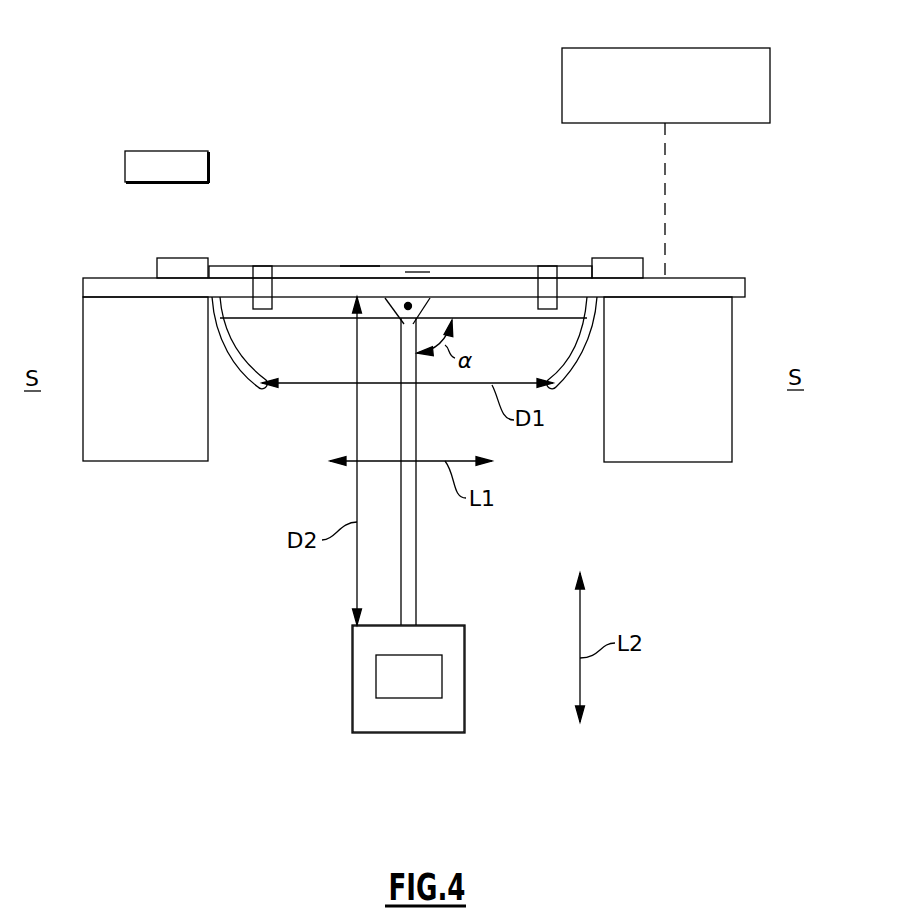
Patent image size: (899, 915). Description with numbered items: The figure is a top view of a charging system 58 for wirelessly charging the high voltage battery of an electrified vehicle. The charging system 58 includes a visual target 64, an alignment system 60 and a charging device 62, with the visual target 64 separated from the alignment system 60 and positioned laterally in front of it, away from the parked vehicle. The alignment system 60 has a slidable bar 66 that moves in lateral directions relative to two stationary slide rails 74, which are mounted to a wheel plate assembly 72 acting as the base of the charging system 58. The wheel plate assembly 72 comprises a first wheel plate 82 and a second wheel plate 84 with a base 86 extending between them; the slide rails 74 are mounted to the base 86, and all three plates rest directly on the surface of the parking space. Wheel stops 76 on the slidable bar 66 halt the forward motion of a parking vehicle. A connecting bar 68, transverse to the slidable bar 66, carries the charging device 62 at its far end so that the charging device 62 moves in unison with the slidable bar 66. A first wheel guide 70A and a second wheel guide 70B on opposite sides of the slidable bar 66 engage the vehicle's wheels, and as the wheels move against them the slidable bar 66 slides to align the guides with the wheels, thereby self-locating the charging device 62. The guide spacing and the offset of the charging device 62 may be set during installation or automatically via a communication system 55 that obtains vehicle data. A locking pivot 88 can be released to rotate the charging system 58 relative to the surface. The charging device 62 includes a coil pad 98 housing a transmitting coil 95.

The communication system 55 is at (687, 48).
The charging system 58 is at (464, 146).
The alignment system 60 is at (483, 277).
The charging device 62 is at (466, 718).
The visual target 64 is at (153, 157).
The slidable bar 66 is at (682, 287).
The connecting bar 68 is at (416, 533).
The first wheel guide 70A is at (248, 360).
The second wheel guide 70B is at (578, 345).
The wheel plate assembly 72 is at (368, 265).
The slide rails 74 is at (263, 270).
The wheel stops 76 is at (185, 267).
The first wheel plate 82 is at (134, 396).
The second wheel plate 84 is at (655, 396).
The base 86 is at (417, 272).
The locking pivot 88 is at (405, 320).
The transmitting coil 95 is at (390, 698).
The coil pad 98 is at (465, 650).